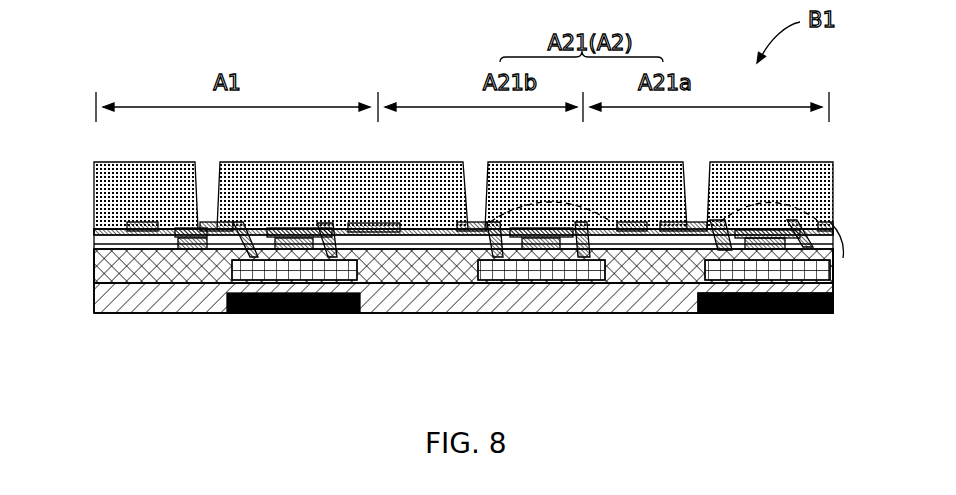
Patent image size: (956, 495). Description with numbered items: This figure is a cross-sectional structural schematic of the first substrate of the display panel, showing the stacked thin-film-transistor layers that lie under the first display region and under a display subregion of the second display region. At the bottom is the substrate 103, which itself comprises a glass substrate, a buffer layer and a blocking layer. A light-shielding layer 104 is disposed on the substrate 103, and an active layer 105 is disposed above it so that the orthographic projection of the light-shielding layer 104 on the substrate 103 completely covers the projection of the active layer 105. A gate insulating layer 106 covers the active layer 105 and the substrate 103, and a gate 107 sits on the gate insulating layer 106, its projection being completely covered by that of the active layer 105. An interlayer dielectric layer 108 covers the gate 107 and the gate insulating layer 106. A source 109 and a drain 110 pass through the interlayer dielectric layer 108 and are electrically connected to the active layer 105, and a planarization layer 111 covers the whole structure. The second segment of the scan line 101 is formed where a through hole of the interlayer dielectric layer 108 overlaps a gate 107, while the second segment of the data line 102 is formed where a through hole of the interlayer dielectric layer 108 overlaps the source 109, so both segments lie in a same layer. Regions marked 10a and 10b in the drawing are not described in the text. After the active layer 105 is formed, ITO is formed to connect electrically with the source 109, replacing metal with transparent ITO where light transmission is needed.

The scan line 101 is at (197, 249).
The data line 102 is at (143, 237).
The substrate 103 is at (93, 300).
The light-shielding layer 104 is at (747, 303).
The active layer 105 is at (833, 258).
The gate insulating layer 106 is at (93, 262).
The gate 107 is at (765, 227).
The interlayer dielectric layer 108 is at (93, 234).
The source 109 is at (693, 222).
The drain 110 is at (827, 217).
The planarization layer 111 is at (93, 181).
The first region 10a is at (535, 287).
The second region 10b is at (783, 317).